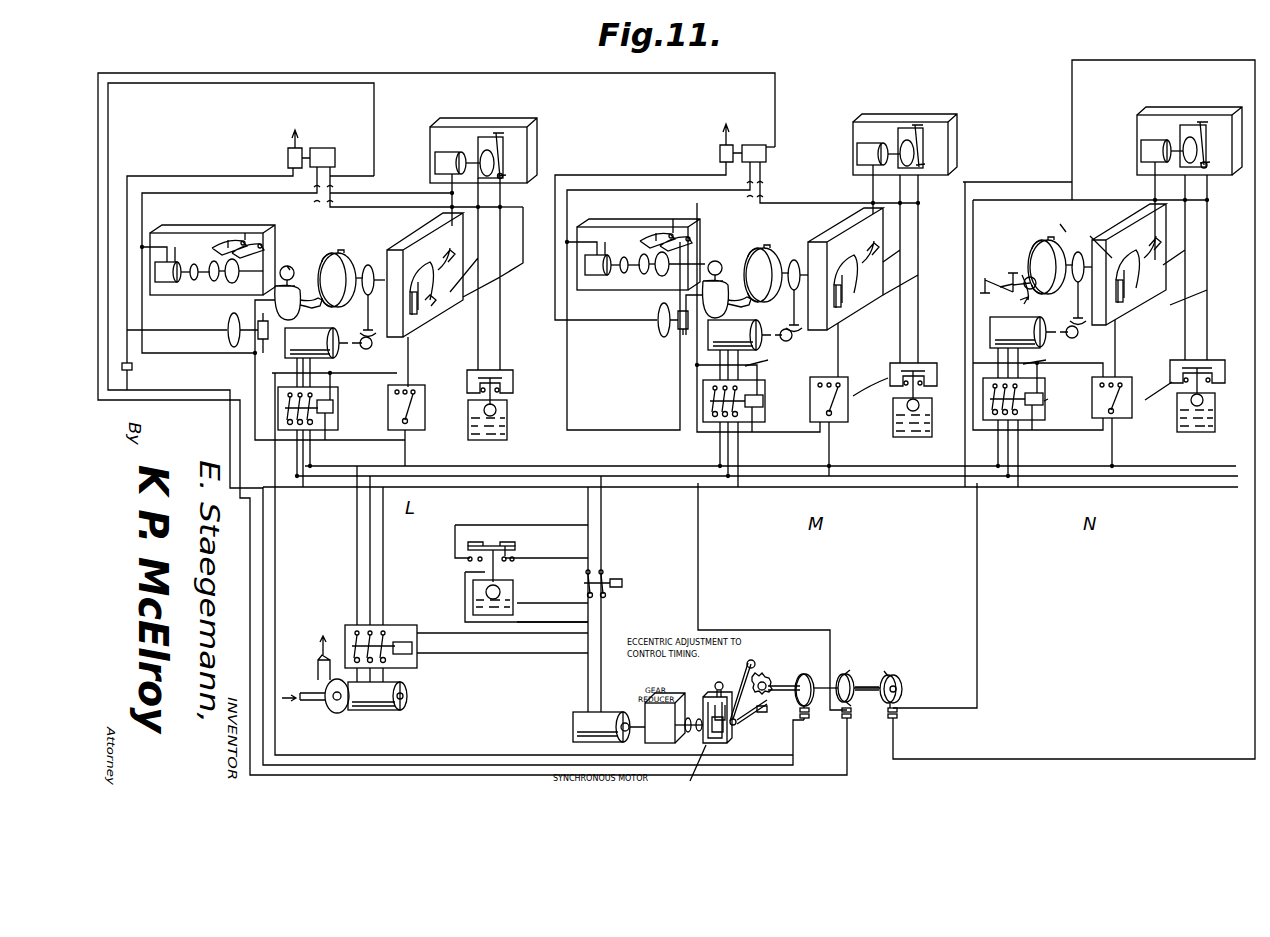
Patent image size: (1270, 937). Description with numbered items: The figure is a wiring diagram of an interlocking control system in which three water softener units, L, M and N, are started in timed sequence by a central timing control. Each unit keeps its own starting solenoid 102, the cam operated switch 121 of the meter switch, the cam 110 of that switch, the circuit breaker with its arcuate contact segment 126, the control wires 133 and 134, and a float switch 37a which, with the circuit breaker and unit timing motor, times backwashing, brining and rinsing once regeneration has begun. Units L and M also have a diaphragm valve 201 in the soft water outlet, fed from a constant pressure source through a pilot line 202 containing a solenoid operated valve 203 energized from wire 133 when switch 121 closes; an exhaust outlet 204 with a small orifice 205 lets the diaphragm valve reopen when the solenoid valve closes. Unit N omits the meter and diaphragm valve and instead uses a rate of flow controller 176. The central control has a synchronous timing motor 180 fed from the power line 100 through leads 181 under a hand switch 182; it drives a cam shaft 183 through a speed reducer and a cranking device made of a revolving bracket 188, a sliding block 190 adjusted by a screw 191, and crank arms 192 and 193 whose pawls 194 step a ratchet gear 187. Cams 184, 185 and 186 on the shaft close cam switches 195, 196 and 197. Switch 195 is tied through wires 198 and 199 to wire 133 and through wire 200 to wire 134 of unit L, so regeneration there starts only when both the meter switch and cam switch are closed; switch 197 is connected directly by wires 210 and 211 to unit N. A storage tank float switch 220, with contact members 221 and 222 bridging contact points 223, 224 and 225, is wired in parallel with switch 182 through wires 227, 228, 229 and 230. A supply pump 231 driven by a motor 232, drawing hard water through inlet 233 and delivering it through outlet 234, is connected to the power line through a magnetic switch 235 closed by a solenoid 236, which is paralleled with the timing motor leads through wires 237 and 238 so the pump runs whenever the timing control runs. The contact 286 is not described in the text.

The power line 100 is at (542, 476).
The solenoid 102 is at (334, 405).
The cam element 110 is at (273, 300).
The cam operated switch 121 is at (242, 240).
The arcuate contact segment 126 is at (420, 265).
The wire 133 is at (348, 278).
The wire 134 is at (318, 374).
The rate of flow controller 176 is at (985, 290).
The main timing motor 180 is at (575, 718).
The leads 181 is at (600, 633).
The switch 182 is at (612, 583).
The cam shaft 183 is at (866, 684).
The contact-making cam 184 is at (808, 676).
The contact-making cam 185 is at (855, 670).
The contact-making cam 186 is at (908, 672).
The ratchet gear 187 is at (780, 685).
The revolving bracket 188 is at (704, 698).
The sliding block 190 is at (712, 743).
The screw 191 is at (721, 688).
The crank arm 192 is at (749, 709).
The crank arm 193 is at (761, 717).
The pawl 194 is at (752, 676).
The cam switch 195 is at (808, 720).
The cam switch 196 is at (851, 718).
The cam switch 197 is at (901, 720).
The wire 198 is at (108, 138).
The wire 199 is at (338, 188).
The wire 200 is at (275, 510).
The diaphragm valve 201 is at (232, 338).
The pilot line 202 is at (200, 170).
The solenoid operated valve 203 is at (288, 156).
The exhaust outlet 204 is at (133, 366).
The orifice 205 is at (130, 370).
The wire 210 is at (1252, 555).
The wire 211 is at (977, 628).
The float switch 220 is at (465, 578).
The contact member 221 is at (475, 545).
The contact member 222 is at (510, 536).
The contact point 223 is at (468, 556).
The contact point 224 is at (478, 562).
The contact point 225 is at (508, 563).
The wire 227 is at (500, 530).
The wire 228 is at (515, 556).
The wire 229 is at (517, 604).
The wire 230 is at (517, 622).
The supply pump 231 is at (338, 713).
The motor 232 is at (372, 712).
The inlet 233 is at (306, 702).
The outlet 234 is at (318, 670).
The magnetic switch 235 is at (350, 625).
The solenoid 236 is at (403, 640).
The wire 237 is at (452, 657).
The wire 238 is at (440, 632).
The contact 286 is at (508, 554).
The float switch 37a is at (508, 390).